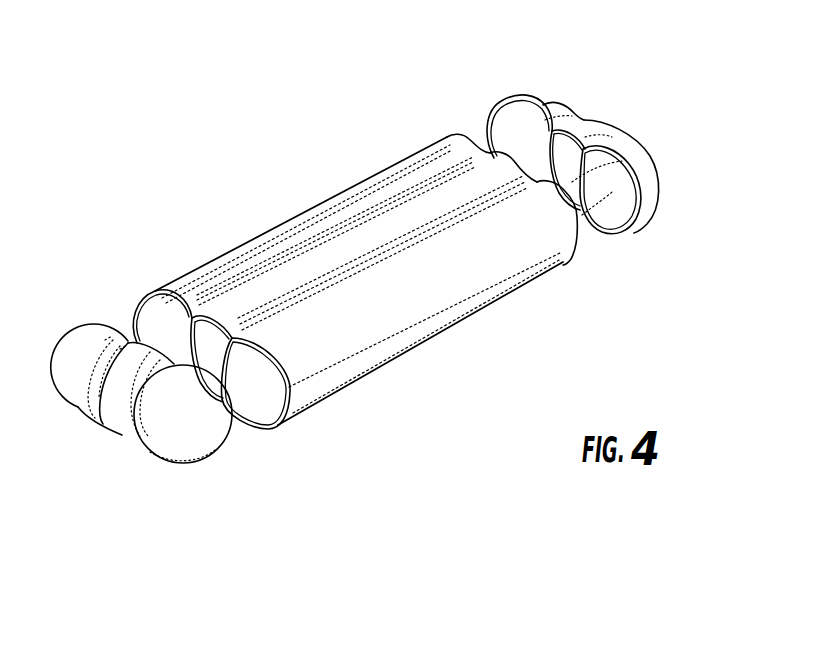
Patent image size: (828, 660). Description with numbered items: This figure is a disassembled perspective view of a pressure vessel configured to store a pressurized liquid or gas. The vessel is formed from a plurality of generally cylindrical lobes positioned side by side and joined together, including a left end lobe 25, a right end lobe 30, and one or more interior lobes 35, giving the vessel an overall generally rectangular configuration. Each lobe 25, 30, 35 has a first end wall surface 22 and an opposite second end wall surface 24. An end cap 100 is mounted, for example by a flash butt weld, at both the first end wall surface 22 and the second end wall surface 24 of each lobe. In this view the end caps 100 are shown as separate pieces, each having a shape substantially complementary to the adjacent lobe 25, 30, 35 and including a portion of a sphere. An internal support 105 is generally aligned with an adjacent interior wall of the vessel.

The first end wall surface 22 is at (138, 294).
The second end wall surface 24 is at (459, 137).
The left end lobe 25 is at (247, 238).
The right end lobe 30 is at (422, 297).
The interior lobe 35 is at (432, 200).
The end cap 100 is at (547, 107).
The internal support 105 is at (567, 177).